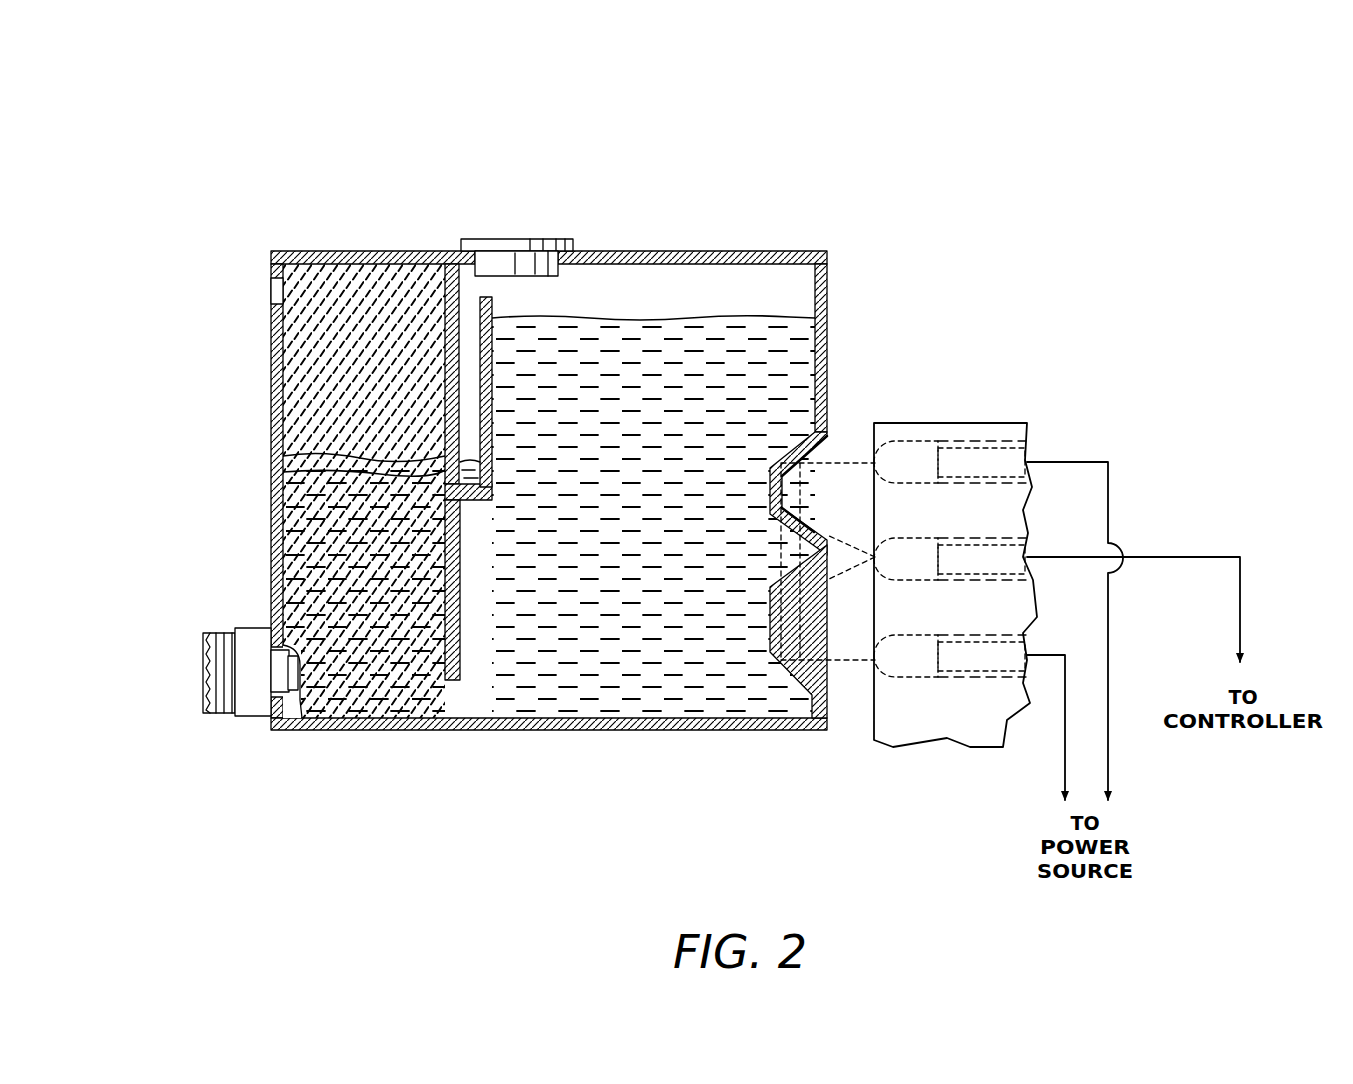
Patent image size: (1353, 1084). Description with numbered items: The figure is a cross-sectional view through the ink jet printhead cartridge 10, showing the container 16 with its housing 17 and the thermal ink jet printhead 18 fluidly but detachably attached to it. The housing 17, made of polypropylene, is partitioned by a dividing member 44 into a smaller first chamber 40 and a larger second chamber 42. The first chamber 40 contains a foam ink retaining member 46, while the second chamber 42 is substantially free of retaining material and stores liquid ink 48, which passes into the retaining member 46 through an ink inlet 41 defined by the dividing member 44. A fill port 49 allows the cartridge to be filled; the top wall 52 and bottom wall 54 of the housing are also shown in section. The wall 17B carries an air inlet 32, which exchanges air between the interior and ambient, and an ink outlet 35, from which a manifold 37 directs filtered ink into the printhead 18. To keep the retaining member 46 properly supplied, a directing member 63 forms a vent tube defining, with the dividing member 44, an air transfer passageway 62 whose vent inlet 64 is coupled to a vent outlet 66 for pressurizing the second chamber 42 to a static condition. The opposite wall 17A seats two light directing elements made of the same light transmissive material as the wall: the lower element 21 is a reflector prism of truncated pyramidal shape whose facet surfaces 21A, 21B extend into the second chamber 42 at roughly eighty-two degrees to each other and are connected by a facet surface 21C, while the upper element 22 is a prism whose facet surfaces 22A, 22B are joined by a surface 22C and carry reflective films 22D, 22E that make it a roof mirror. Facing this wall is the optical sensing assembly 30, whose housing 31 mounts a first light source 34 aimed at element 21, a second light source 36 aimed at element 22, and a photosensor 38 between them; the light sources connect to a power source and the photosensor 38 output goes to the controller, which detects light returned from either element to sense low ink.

The ink jet printhead cartridge 10 is at (461, 134).
The container 16 is at (713, 247).
The housing 17 is at (541, 479).
The wall 17A is at (828, 310).
The wall 17B is at (271, 400).
The thermal ink jet printhead 18 is at (205, 665).
The light directing element 21 is at (752, 624).
The facet surface 21A is at (787, 684).
The facet surface 21B is at (768, 597).
The facet surface 21C is at (750, 645).
The light directing element 22 is at (771, 453).
The facet surface 22A is at (790, 540).
The facet surface 22B is at (800, 445).
The surface 22C is at (773, 455).
The reflective film 22D is at (845, 500).
The reflective film 22E is at (827, 470).
The optical sensing assembly 30 is at (986, 397).
The housing 31 is at (940, 422).
The air inlet 32 is at (271, 300).
The first light source 34 is at (955, 640).
The ink outlet 35 is at (283, 655).
The second light source 36 is at (955, 450).
The manifold 37 is at (268, 700).
The photosensor 38 is at (955, 545).
The first chamber 40 is at (313, 331).
The ink inlet 41 is at (453, 690).
The second chamber 42 is at (648, 293).
The dividing member 44 is at (455, 312).
The ink retaining member 46 is at (300, 492).
The liquid ink 48 is at (606, 360).
The fill port 49 is at (565, 237).
The top wall 52 is at (325, 251).
The bottom wall 54 is at (640, 722).
The air transfer passageway 62 is at (505, 410).
The directing member 63 is at (530, 310).
The vent inlet 64 is at (452, 480).
The vent outlet 66 is at (486, 290).